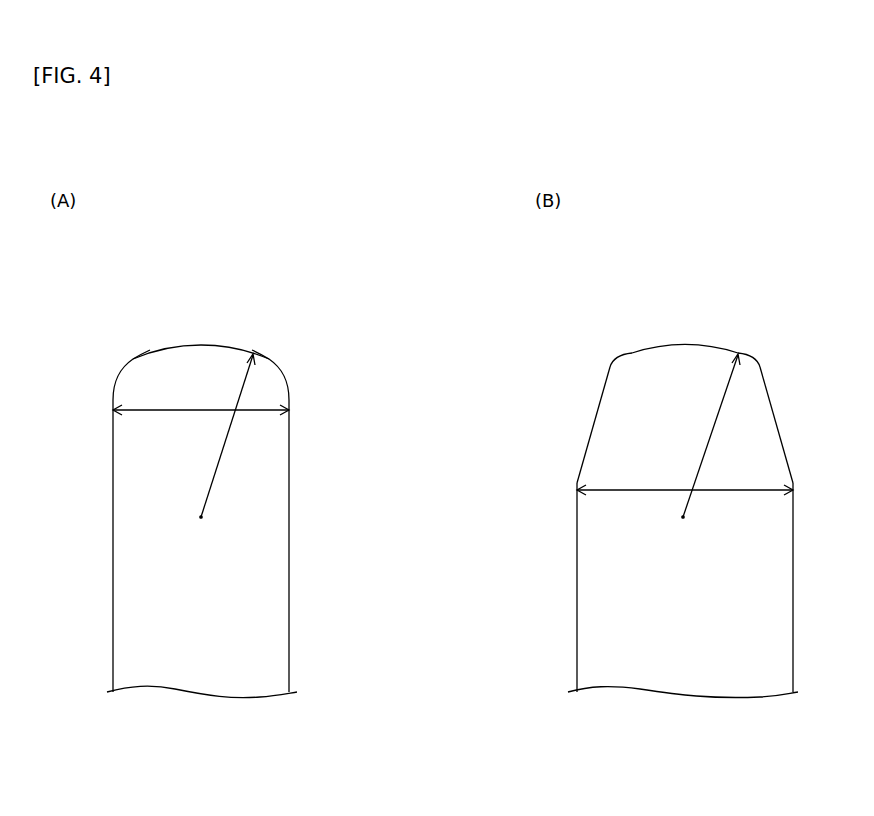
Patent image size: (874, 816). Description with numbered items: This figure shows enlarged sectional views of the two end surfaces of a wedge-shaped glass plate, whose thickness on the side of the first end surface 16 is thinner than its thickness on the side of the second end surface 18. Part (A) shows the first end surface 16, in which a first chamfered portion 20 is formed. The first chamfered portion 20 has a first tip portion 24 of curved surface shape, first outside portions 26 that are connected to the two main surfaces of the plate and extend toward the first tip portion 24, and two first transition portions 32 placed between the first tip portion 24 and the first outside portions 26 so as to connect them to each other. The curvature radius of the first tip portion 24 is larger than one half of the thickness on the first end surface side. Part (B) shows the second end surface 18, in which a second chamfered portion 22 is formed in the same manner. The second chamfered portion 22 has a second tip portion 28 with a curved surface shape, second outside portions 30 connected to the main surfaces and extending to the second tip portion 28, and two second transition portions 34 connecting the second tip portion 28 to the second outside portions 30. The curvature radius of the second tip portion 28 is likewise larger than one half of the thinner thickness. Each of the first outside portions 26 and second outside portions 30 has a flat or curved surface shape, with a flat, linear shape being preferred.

The first end surface 16 is at (204, 511).
The second end surface 18 is at (688, 511).
The first chamfered portion 20 is at (206, 331).
The second chamfered portion 22 is at (690, 373).
The first tip portion 24 is at (199, 343).
The first outside portions 26 is at (118, 390).
The second tip portion 28 is at (684, 343).
The second outside portions 30 is at (592, 430).
The first transition portions 32 is at (133, 359).
The second transition portions 34 is at (617, 358).